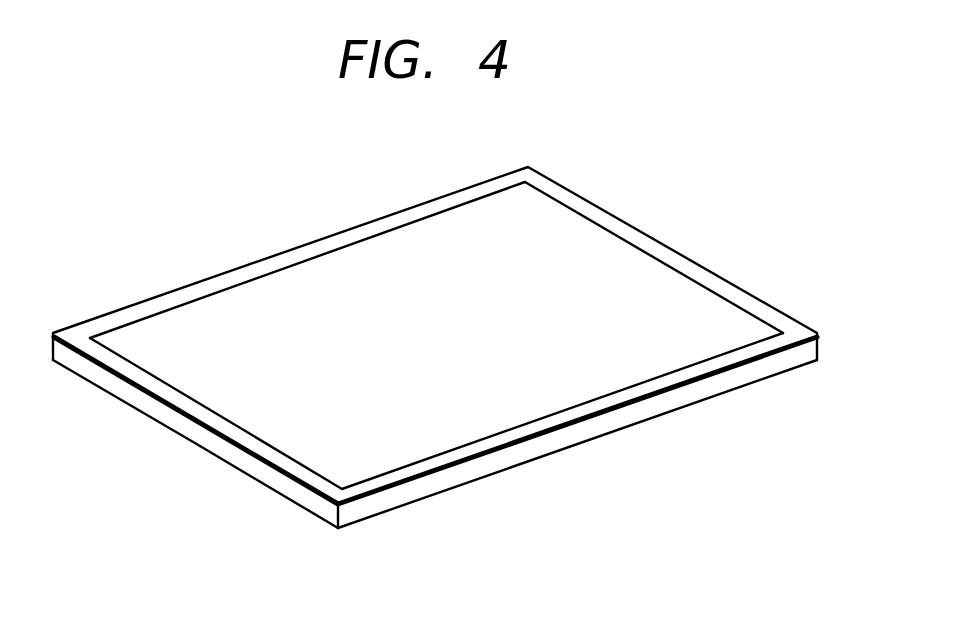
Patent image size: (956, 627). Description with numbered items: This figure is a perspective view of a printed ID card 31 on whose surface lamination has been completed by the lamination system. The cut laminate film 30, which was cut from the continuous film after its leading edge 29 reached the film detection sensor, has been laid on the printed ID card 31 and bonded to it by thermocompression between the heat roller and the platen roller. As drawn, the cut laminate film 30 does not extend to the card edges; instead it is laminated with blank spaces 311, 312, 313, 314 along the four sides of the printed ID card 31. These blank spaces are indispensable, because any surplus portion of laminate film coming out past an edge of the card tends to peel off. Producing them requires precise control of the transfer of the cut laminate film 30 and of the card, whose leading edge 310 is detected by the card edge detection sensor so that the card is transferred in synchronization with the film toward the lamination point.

The leading edge 29 is at (223, 422).
The cut laminate film 30 is at (582, 243).
The printed ID card 31 is at (708, 393).
The leading edge 310 is at (145, 407).
The blank space 311 is at (288, 468).
The blank space 312 is at (522, 435).
The blank space 313 is at (315, 245).
The blank space 314 is at (732, 293).